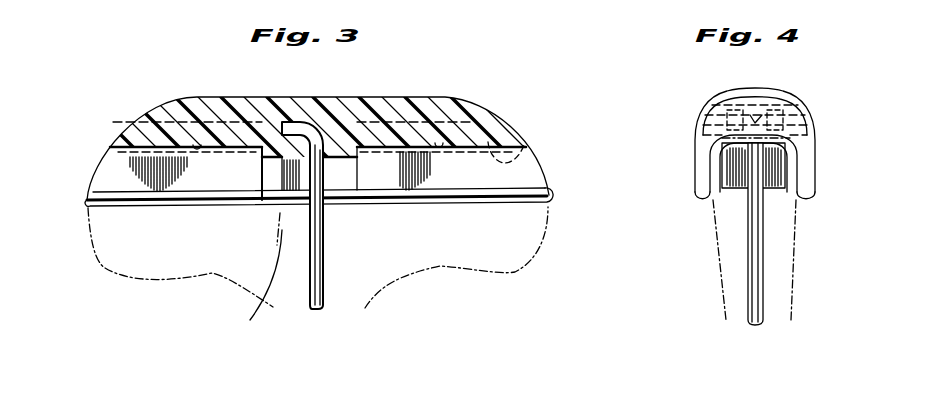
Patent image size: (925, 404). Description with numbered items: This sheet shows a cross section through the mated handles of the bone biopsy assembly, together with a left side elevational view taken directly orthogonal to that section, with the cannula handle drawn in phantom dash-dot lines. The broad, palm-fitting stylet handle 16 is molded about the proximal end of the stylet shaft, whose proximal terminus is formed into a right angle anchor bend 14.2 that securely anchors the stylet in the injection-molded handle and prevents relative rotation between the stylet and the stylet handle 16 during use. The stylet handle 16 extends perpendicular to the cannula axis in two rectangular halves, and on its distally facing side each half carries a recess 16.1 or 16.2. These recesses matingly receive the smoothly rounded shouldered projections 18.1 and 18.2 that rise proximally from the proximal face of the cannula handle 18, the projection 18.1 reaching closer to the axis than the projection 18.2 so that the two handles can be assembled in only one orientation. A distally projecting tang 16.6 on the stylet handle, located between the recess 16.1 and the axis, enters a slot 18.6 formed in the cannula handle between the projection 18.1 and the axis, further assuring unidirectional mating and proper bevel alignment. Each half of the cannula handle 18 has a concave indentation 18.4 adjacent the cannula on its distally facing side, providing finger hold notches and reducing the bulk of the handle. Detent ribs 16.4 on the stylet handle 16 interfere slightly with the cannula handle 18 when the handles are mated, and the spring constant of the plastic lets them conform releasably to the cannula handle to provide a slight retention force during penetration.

In FIG. 3, the right angle anchor bend 14.2 is at (300, 121).
In FIG. 4, the right angle anchor bend 14.2 is at (750, 115).
In FIG. 3, the stylet handle 16 is at (210, 97).
In FIG. 4, the stylet handle 16 is at (717, 98).
In FIG. 3, the recess 16.1 is at (152, 135).
In FIG. 3, the recess 16.2 is at (447, 142).
In FIG. 3, the detent ribs 16.4 is at (550, 192).
In FIG. 4, the detent ribs 16.4 is at (808, 193).
In FIG. 3, the tang 16.6 is at (265, 207).
In FIG. 4, the tang 16.6 is at (738, 189).
In FIG. 3, the cannula handle 18 is at (93, 260).
In FIG. 4, the cannula handle 18 is at (717, 258).
In FIG. 3, the shouldered projection 18.1 is at (125, 140).
In FIG. 3, the shouldered projection 18.2 is at (520, 157).
In FIG. 3, the concave indentation 18.4 is at (227, 280).
In FIG. 3, the slot 18.6 is at (275, 292).